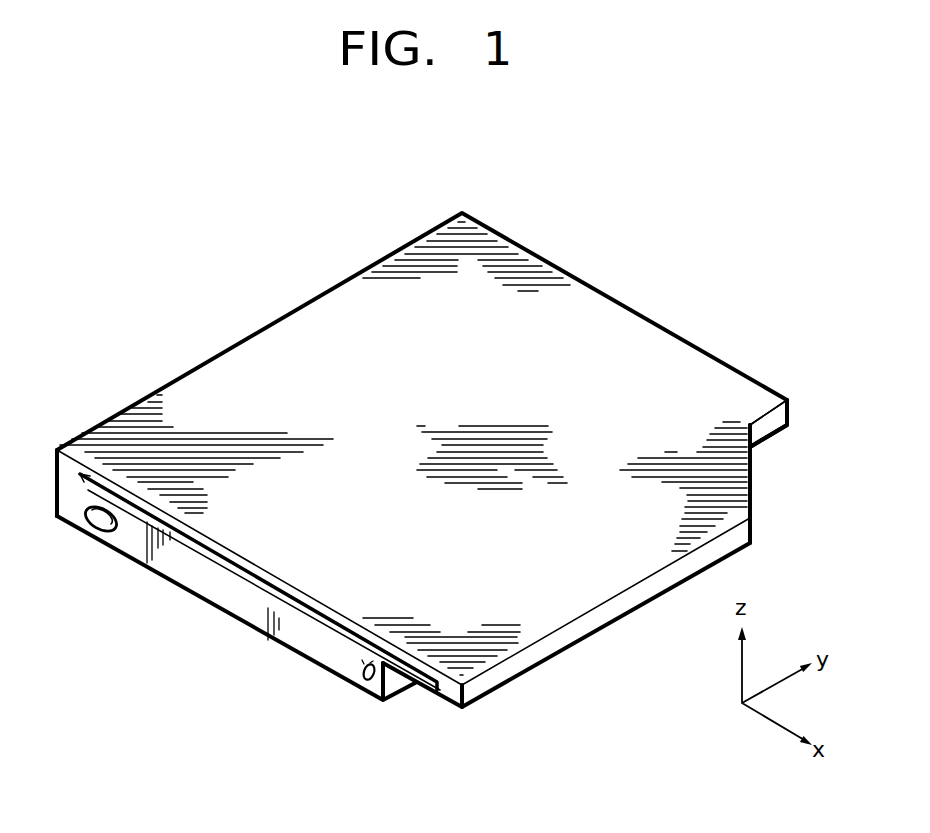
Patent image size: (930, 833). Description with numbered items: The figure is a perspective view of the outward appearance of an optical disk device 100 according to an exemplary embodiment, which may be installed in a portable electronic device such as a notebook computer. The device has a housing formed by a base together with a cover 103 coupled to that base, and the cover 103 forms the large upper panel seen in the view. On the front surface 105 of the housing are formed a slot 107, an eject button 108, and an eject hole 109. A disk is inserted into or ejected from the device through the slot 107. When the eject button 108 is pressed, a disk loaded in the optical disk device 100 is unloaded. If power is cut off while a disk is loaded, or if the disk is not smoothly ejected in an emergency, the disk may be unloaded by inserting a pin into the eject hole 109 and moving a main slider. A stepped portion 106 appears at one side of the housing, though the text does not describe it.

The optical disk device 100 is at (148, 283).
The cover 103 is at (336, 310).
The front surface 105 is at (305, 638).
The side protrusion 106 is at (698, 345).
The slot 107 is at (238, 566).
The eject button 108 is at (90, 535).
The eject hole 109 is at (367, 672).